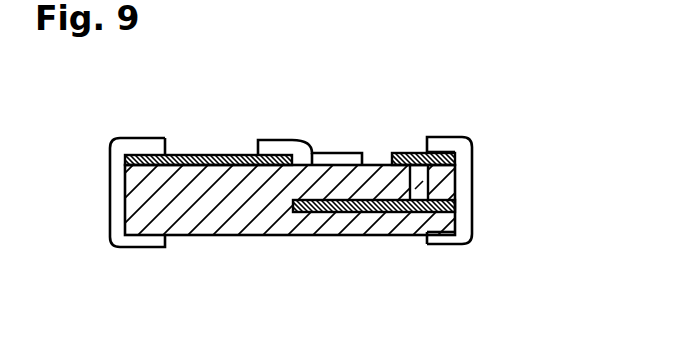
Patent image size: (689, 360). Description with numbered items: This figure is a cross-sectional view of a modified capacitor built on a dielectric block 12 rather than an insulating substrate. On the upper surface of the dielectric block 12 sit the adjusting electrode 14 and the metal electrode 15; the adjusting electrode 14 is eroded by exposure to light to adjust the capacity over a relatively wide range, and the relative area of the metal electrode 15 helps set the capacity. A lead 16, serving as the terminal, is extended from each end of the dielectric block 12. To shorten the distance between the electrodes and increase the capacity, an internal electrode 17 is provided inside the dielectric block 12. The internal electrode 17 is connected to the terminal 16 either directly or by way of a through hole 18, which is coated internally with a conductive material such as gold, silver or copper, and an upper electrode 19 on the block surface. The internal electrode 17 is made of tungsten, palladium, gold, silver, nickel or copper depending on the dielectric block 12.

The dielectric block 12 is at (185, 212).
The adjusting electrode 14 is at (310, 152).
The metal electrode 15 is at (190, 153).
The lead 16 is at (135, 243).
The internal electrode 17 is at (433, 213).
The through hole 18 is at (458, 137).
The upper electrode 19 is at (400, 154).